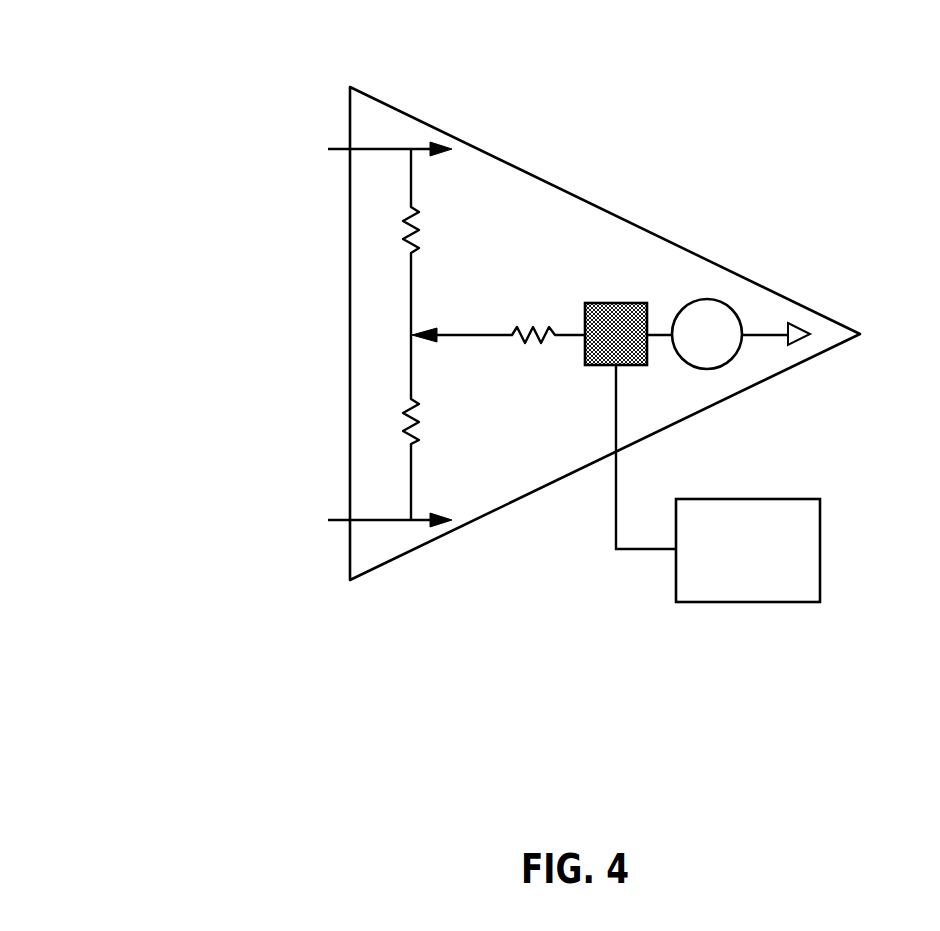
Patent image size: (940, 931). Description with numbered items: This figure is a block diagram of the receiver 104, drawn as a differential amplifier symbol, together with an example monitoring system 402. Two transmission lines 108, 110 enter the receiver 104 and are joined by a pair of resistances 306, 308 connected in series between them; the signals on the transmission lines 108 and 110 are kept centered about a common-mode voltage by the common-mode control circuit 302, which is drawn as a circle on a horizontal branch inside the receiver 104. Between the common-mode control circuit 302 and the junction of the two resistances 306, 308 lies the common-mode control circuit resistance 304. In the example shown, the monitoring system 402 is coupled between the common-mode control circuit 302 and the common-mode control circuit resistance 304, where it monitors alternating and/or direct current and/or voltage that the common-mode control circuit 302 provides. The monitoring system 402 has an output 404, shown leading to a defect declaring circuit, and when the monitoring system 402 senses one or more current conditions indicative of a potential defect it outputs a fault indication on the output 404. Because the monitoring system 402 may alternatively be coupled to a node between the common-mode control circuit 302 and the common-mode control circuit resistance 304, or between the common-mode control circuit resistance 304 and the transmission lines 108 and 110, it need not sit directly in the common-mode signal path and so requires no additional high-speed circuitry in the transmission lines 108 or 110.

The receiver 104 is at (143, 62).
The transmission line 108 is at (340, 147).
The transmission line 110 is at (340, 517).
The common-mode control circuit Vcm 302 is at (738, 312).
The common-mode control circuit resistance Rcm 304 is at (515, 350).
The resistance R 306 is at (420, 238).
The resistance R 308 is at (420, 425).
The monitoring system 402 is at (612, 302).
The output 404 is at (822, 538).